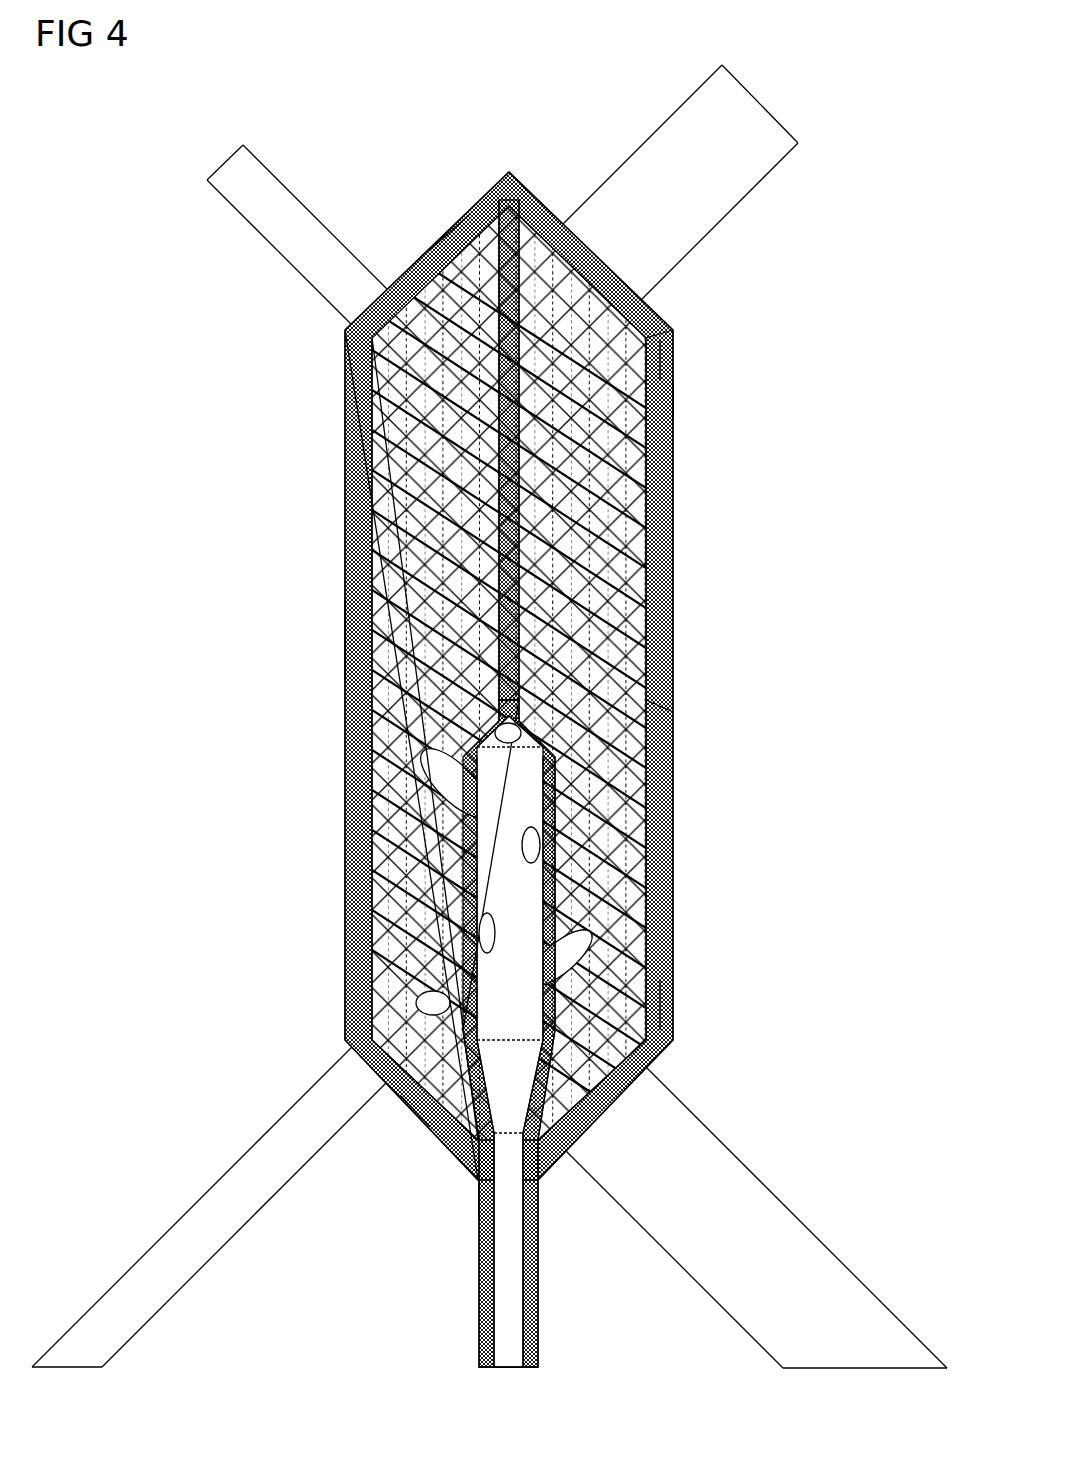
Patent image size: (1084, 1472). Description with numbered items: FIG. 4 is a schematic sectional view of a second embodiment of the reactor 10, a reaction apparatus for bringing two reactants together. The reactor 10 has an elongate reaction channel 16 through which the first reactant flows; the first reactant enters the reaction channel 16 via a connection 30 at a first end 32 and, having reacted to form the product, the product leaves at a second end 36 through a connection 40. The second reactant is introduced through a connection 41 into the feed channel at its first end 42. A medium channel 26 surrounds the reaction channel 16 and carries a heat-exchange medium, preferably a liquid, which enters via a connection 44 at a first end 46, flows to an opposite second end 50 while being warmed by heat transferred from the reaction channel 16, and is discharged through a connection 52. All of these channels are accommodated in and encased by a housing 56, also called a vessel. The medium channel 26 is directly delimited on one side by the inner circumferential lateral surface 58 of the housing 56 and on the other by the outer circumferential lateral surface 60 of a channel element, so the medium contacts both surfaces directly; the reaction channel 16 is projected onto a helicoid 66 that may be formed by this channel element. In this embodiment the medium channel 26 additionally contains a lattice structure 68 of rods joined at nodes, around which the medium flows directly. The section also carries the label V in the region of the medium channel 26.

The reactor 10 is at (380, 95).
The reaction channel 16 is at (672, 680).
The medium channel 26 is at (672, 712).
The connection 30 is at (192, 1275).
The first end 32 is at (423, 1100).
The second end 36 is at (390, 278).
The connection 40 is at (305, 219).
The connection 41 is at (540, 1298).
The first end 42 is at (480, 1178).
The connection 44 is at (728, 1297).
The first end 46 is at (672, 1006).
The second end 50 is at (542, 212).
The connection 52 is at (772, 178).
The housing 56 is at (672, 404).
The inner circumferential lateral surface 58 is at (672, 360).
The outer circumferential lateral surface 60 is at (672, 572).
The helicoid 66 is at (672, 506).
The lattice structure 68 is at (445, 235).
The volume V is at (345, 637).